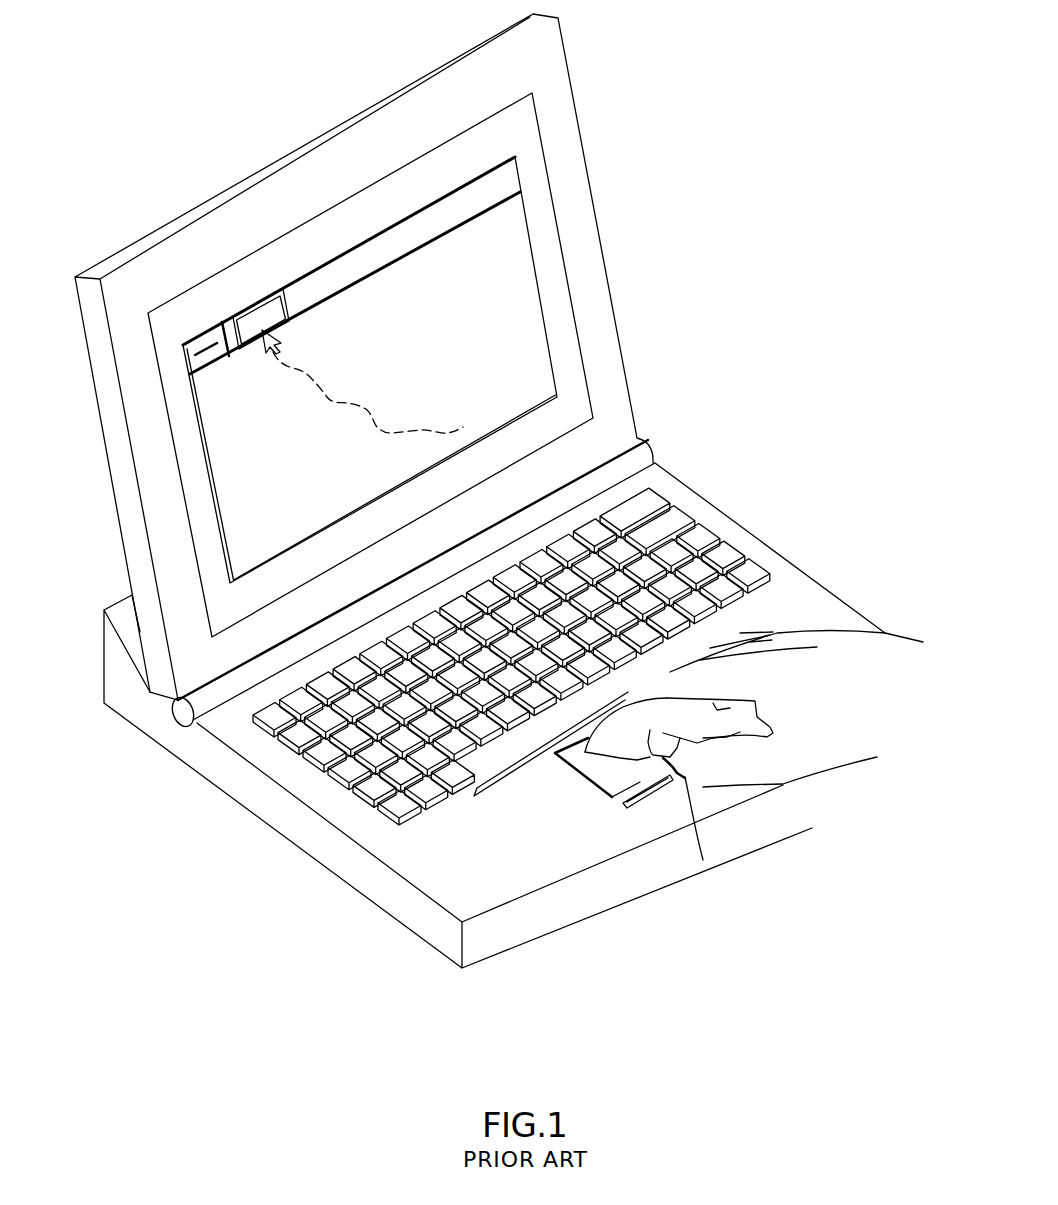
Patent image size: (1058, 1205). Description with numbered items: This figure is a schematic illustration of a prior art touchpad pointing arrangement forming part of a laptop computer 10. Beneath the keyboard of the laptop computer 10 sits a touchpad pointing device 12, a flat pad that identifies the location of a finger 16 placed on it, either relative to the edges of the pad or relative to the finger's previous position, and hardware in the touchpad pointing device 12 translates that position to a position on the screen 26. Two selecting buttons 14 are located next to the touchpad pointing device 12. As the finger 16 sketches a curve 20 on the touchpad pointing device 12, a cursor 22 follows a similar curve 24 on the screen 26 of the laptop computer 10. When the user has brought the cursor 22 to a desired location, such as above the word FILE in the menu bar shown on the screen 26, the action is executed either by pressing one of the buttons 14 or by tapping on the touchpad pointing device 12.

The laptop computer 10 is at (675, 488).
The touchpad pointing device 12 is at (617, 788).
The selecting buttons 14 is at (652, 787).
The finger 16 is at (670, 698).
The curve 20 is at (622, 757).
The cursor 22 is at (282, 342).
The curve 24 is at (350, 403).
The screen 26 is at (495, 183).